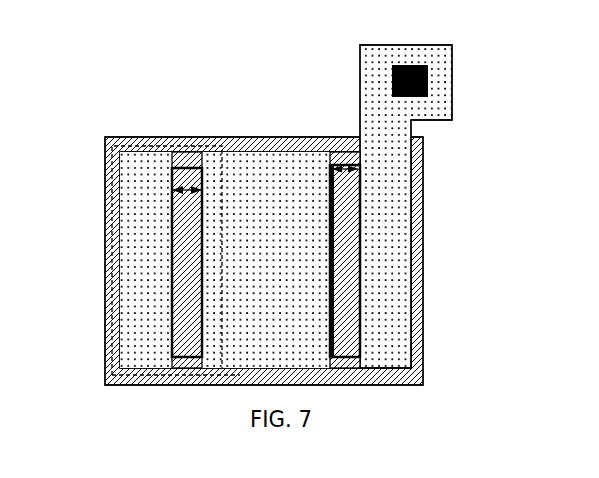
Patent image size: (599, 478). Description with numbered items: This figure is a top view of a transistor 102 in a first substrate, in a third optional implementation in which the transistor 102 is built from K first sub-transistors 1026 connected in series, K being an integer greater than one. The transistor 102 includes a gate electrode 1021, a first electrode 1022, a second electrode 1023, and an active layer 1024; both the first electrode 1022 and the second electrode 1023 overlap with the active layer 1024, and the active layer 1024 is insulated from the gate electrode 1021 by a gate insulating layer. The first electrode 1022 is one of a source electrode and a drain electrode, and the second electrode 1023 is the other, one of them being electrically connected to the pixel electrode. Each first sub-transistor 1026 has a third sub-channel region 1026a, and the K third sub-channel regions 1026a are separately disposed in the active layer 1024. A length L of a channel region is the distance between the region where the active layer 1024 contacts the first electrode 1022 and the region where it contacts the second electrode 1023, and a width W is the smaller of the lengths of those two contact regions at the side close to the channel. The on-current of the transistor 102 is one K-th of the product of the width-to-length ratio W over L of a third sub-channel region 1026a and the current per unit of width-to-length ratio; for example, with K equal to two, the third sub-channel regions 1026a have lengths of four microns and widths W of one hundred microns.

The transistor 102 is at (80, 32).
The gate electrode 1021 is at (418, 363).
The first electrode 1022 is at (135, 282).
The second electrode 1023 is at (443, 98).
The active layer 1024 is at (345, 299).
The first sub-transistor 1026 is at (113, 252).
The third sub-channel region 1026a is at (337, 273).
The length of the channel region L is at (185, 189).
The width of the channel region W is at (335, 168).